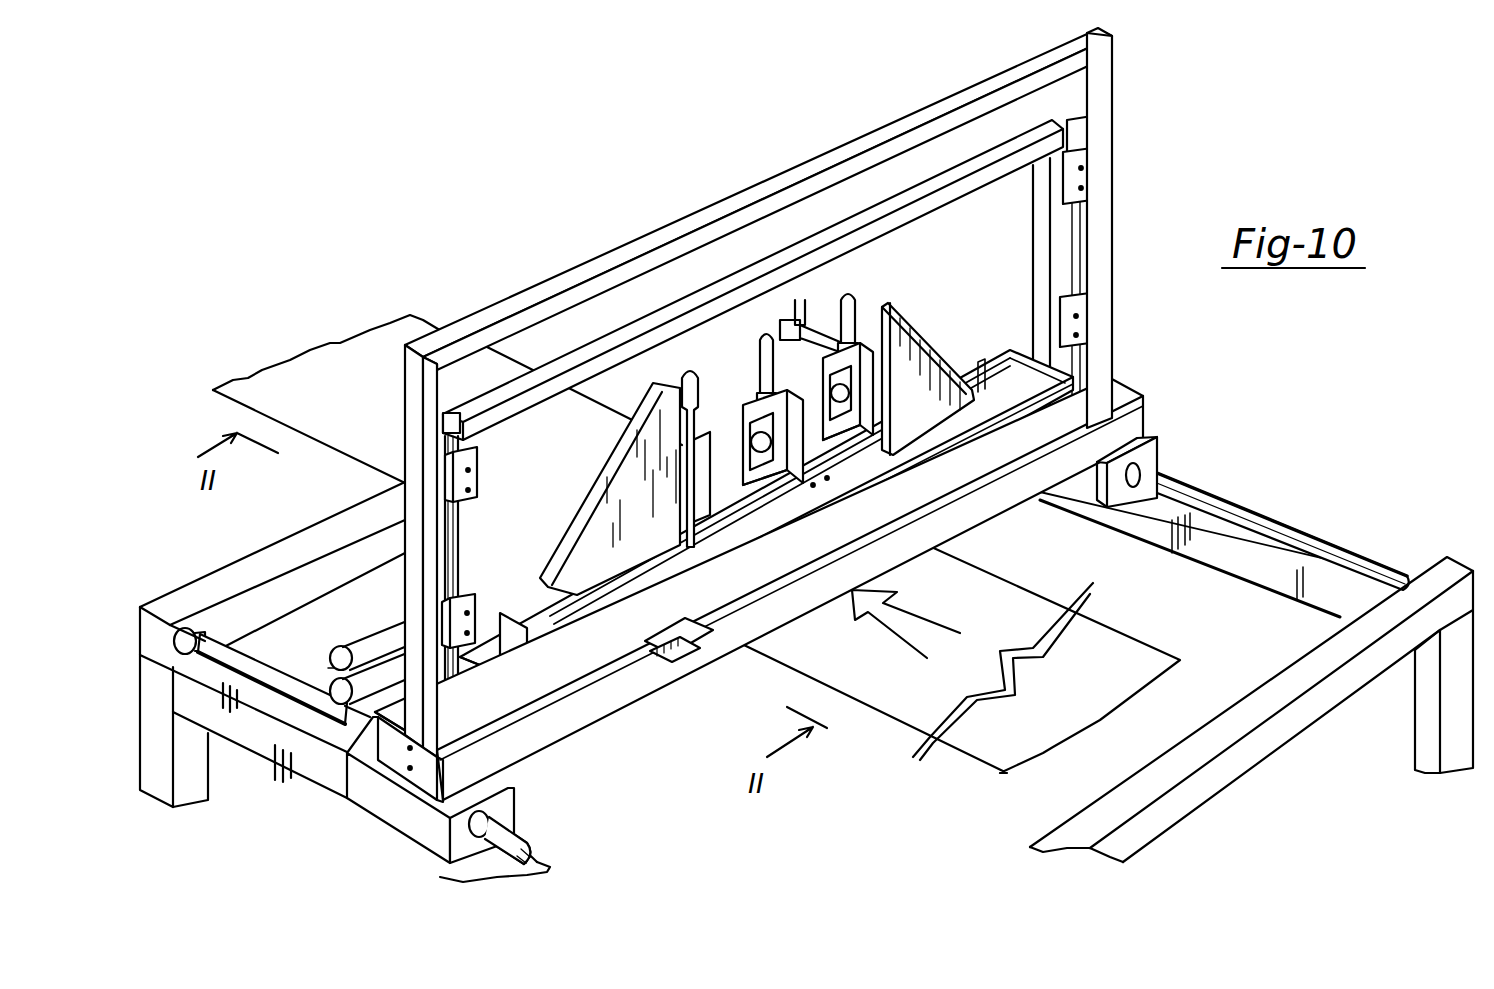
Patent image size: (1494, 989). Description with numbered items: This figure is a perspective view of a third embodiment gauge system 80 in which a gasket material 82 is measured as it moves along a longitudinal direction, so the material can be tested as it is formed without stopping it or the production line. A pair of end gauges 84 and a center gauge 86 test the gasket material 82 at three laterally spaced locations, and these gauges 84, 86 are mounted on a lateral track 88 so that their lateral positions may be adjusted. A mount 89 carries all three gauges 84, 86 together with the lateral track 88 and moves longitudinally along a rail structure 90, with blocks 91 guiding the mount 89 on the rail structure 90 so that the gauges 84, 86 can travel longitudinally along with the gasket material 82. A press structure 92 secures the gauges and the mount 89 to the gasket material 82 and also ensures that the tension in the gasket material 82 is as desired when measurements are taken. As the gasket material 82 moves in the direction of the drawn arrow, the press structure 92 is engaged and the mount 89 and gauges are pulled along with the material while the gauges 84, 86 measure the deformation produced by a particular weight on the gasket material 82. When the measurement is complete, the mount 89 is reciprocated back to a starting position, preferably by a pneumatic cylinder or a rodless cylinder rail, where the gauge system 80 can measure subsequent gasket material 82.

The gauge system 80 is at (1173, 331).
The gasket material 82 is at (1010, 593).
The end gauges 84 is at (635, 507).
The center gauge 86 is at (780, 467).
The lateral track 88 is at (620, 638).
The mount 89 is at (552, 727).
The rail structure 90 is at (1200, 487).
The blocks 91 is at (380, 810).
The press structure 92 is at (745, 600).